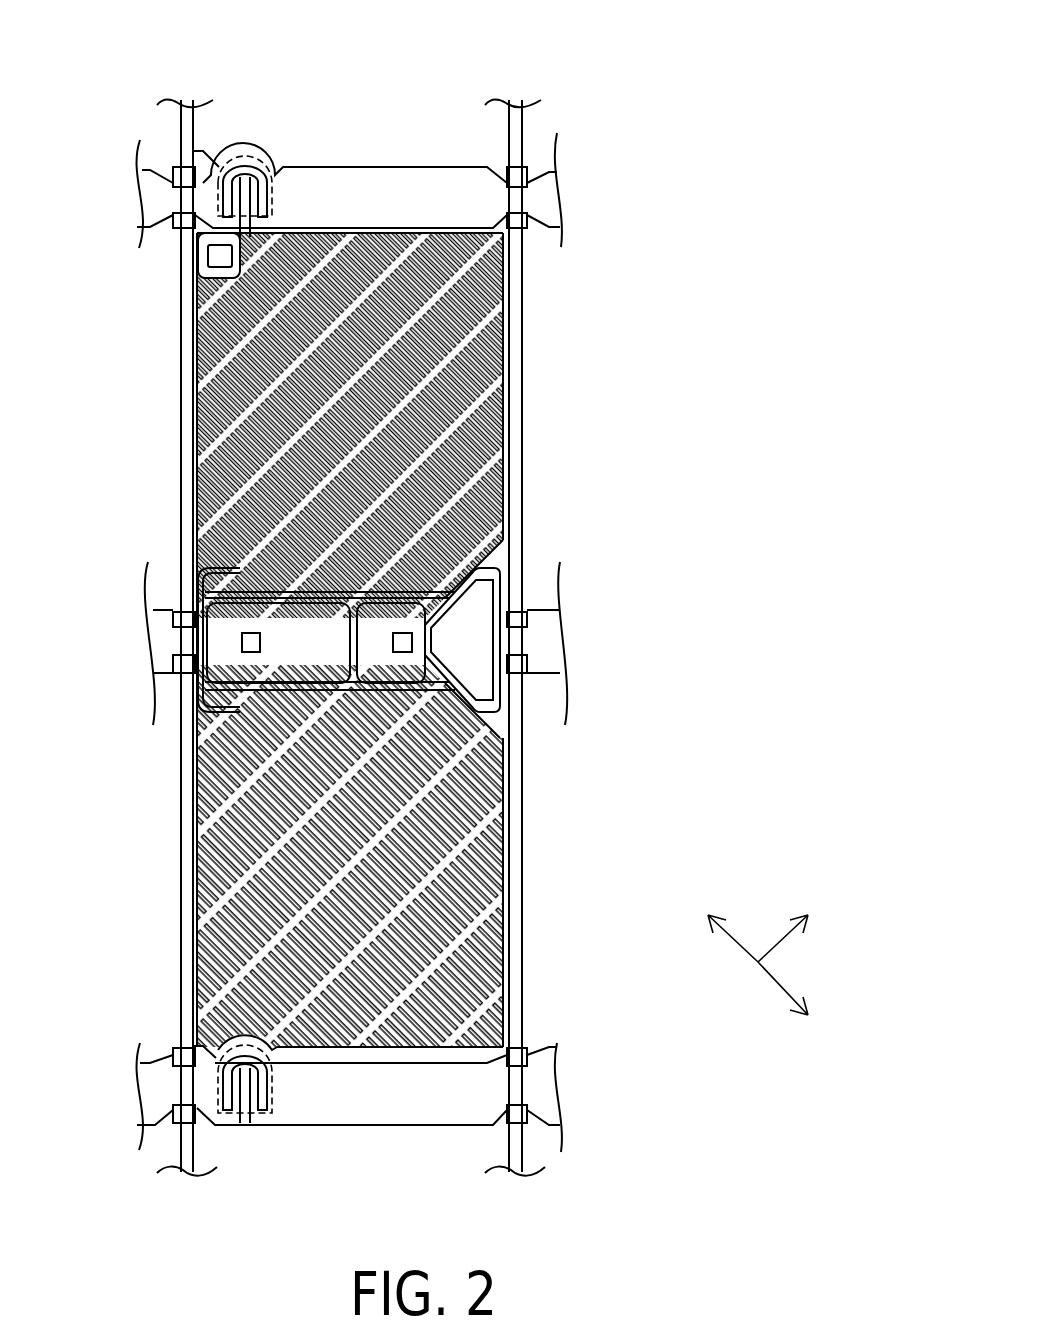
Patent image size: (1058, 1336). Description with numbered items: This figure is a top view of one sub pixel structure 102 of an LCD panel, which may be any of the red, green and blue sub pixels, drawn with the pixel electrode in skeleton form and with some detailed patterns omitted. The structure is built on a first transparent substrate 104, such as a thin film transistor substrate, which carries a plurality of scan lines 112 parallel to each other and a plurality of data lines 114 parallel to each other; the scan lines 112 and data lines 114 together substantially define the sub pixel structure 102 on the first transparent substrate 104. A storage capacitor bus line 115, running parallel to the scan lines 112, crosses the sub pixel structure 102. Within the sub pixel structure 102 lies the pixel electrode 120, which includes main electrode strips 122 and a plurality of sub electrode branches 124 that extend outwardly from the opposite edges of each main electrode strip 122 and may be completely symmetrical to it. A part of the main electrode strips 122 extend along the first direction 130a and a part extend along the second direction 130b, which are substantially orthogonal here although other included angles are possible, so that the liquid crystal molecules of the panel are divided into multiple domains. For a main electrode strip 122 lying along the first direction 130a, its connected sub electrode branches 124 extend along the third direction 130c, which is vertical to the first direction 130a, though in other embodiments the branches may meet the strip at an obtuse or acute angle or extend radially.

The sub pixel structure 102 is at (705, 71).
The first transparent substrate 104 is at (387, 141).
The scan lines 112 is at (553, 187).
The data lines 114 is at (183, 124).
The storage capacitor bus lines 115 is at (555, 643).
The pixel electrode 120 is at (490, 737).
The main electrode strip 122 is at (503, 333).
The sub electrode branches 124 is at (497, 388).
The first direction 130a is at (811, 922).
The second direction 130b is at (710, 922).
The third direction 130c is at (811, 1007).